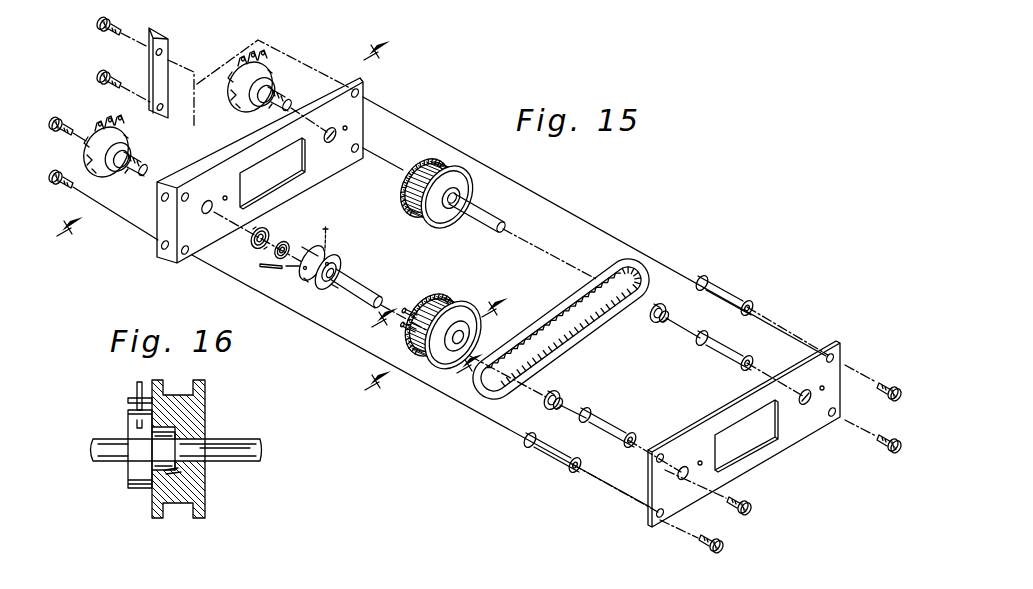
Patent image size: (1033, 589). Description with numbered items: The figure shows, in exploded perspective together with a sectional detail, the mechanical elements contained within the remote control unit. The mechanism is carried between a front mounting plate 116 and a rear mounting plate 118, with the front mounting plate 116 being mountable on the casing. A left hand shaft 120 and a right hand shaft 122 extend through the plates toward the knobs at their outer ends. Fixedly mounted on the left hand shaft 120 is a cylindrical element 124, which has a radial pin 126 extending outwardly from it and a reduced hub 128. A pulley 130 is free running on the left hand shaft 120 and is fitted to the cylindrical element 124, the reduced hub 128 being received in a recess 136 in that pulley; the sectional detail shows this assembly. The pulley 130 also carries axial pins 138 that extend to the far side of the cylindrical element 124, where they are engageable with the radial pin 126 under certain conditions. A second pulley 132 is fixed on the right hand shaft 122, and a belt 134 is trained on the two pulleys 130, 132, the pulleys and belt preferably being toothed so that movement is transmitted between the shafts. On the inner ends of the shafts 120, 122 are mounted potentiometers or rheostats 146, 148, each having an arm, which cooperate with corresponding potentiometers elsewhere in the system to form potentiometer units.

In FIG. 15, the front mounting plate 116 is at (845, 350).
In FIG. 15, the rear mounting plate 118 is at (368, 95).
In FIG. 15, the left hand shaft 120 is at (367, 283).
In FIG. 16, the left hand shaft 120 is at (240, 445).
In FIG. 15, the right hand shaft 122 is at (478, 214).
In FIG. 15, the cylindrical element 124 is at (308, 282).
In FIG. 16, the cylindrical element 124 is at (140, 489).
In FIG. 15, the radial pin 126 is at (266, 270).
In FIG. 16, the radial pin 126 is at (135, 384).
In FIG. 15, the reduced hub 128 is at (313, 283).
In FIG. 16, the reduced hub 128 is at (150, 476).
In FIG. 15, the pulley 130 is at (446, 300).
In FIG. 16, the pulley 130 is at (198, 518).
In FIG. 15, the pulley 132 is at (444, 166).
In FIG. 15, the belt 134 is at (628, 262).
In FIG. 15, the recess 136 is at (605, 356).
In FIG. 16, the recess 136 is at (176, 486).
In FIG. 15, the axial pins 138 is at (409, 306).
In FIG. 16, the axial pins 138 is at (127, 400).
In FIG. 15, the potentiometer 146 is at (86, 158).
In FIG. 15, the potentiometer 148 is at (274, 68).